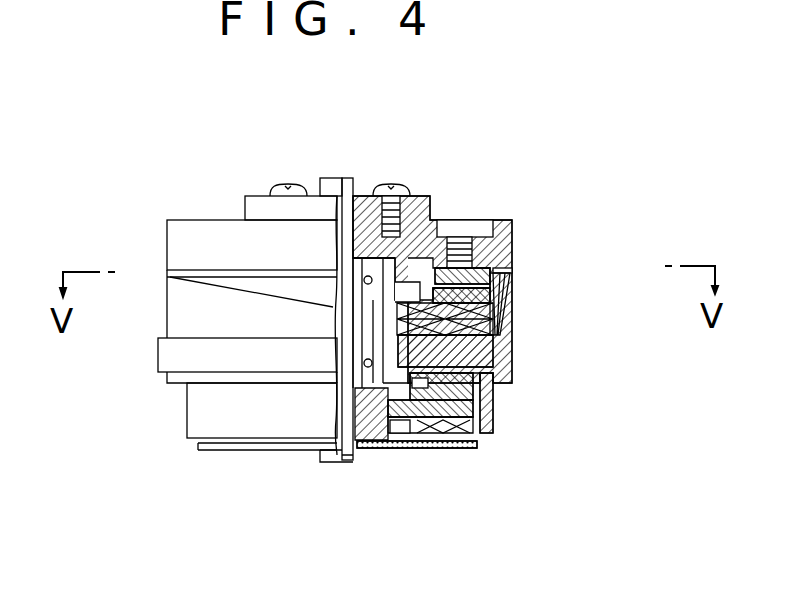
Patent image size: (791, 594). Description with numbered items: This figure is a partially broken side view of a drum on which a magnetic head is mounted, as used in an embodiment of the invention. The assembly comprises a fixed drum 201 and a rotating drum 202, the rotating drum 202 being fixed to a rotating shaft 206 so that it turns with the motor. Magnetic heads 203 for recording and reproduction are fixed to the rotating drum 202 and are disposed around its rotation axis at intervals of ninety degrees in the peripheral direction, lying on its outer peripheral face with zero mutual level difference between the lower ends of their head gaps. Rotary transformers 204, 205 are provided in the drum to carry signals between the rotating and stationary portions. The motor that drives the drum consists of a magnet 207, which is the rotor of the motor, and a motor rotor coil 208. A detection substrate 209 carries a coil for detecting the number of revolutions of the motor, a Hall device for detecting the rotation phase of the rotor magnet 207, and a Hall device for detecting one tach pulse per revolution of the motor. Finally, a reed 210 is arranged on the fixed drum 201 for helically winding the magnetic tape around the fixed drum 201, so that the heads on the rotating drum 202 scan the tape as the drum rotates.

The fixed drum 201 is at (512, 280).
The rotating drum 202 is at (513, 230).
The magnetic head 203 is at (512, 260).
The rotary transformer 204 is at (513, 313).
The rotary transformer 205 is at (465, 357).
The rotating shaft 206 is at (332, 177).
The magnet 207 is at (467, 410).
The motor rotor coil 208 is at (470, 450).
The detection substrate 209 is at (493, 338).
The reed 210 is at (218, 283).